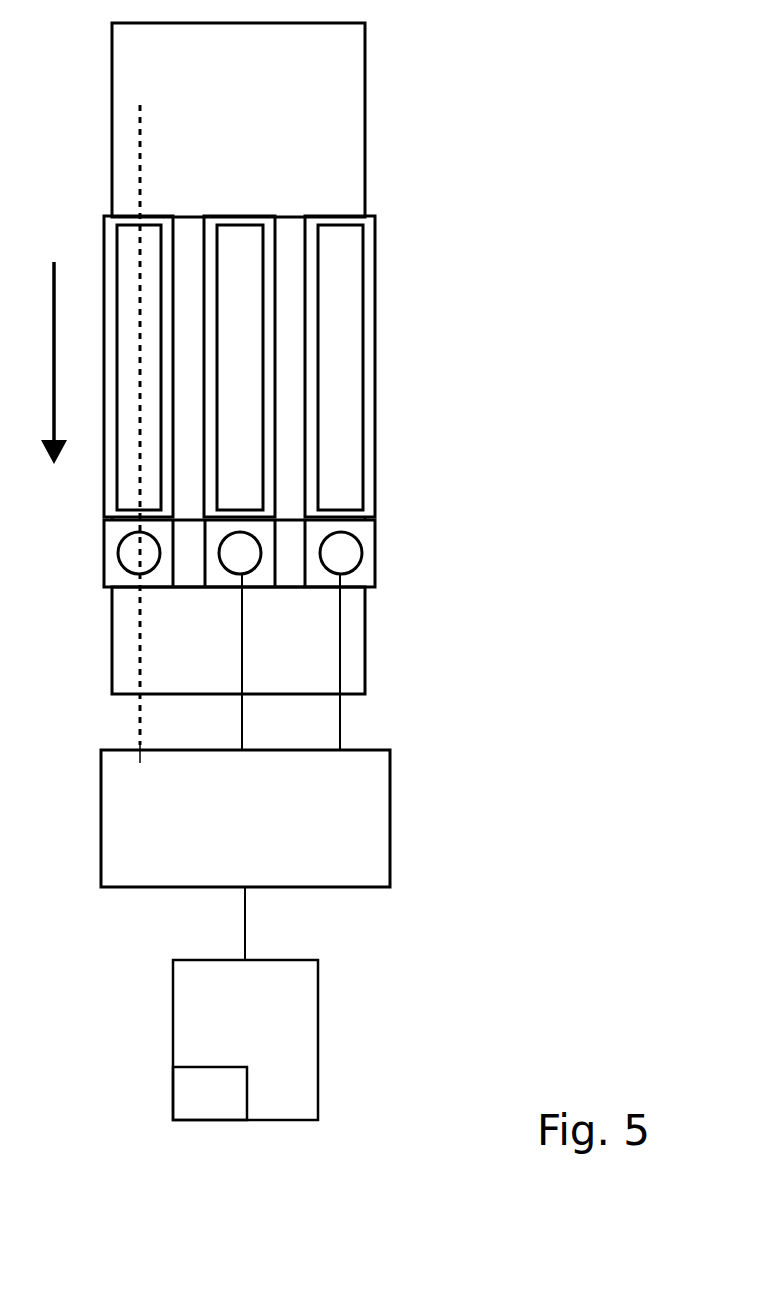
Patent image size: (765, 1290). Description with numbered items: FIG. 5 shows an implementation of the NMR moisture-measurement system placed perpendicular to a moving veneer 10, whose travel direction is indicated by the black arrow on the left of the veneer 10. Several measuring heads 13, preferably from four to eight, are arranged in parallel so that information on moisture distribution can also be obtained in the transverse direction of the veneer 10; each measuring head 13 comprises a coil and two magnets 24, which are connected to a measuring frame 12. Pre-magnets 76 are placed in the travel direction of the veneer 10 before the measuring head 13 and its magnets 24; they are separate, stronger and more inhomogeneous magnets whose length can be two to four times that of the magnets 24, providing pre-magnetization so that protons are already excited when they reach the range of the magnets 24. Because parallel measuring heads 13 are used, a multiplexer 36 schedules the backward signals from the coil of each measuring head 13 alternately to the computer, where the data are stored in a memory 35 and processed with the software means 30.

The veneer 10 is at (272, 161).
The pre-magnets 76 is at (160, 367).
The measuring head 13 is at (422, 541).
The measuring frame 12 is at (377, 553).
The magnets 24 is at (323, 568).
The multiplexer 36 is at (230, 842).
The software means 30 is at (229, 1029).
The memory 35 is at (202, 1107).